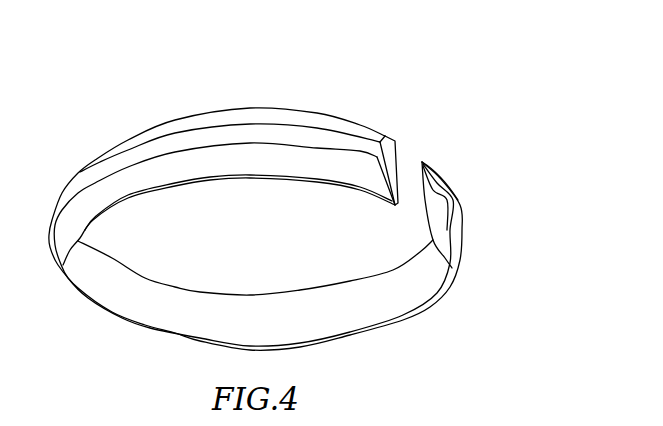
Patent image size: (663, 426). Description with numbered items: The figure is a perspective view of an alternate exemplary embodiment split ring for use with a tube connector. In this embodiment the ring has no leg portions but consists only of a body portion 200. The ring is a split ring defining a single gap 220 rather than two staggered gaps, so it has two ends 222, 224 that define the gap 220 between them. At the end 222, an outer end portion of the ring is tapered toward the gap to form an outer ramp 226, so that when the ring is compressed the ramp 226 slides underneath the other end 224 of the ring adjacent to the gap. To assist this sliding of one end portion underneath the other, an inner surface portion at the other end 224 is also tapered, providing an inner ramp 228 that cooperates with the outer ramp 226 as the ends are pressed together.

The body portion 200 is at (285, 132).
The gap 220 is at (408, 170).
The end 222 is at (393, 146).
The end 224 is at (440, 179).
The outer ramp 226 is at (405, 188).
The inner ramp 228 is at (432, 206).